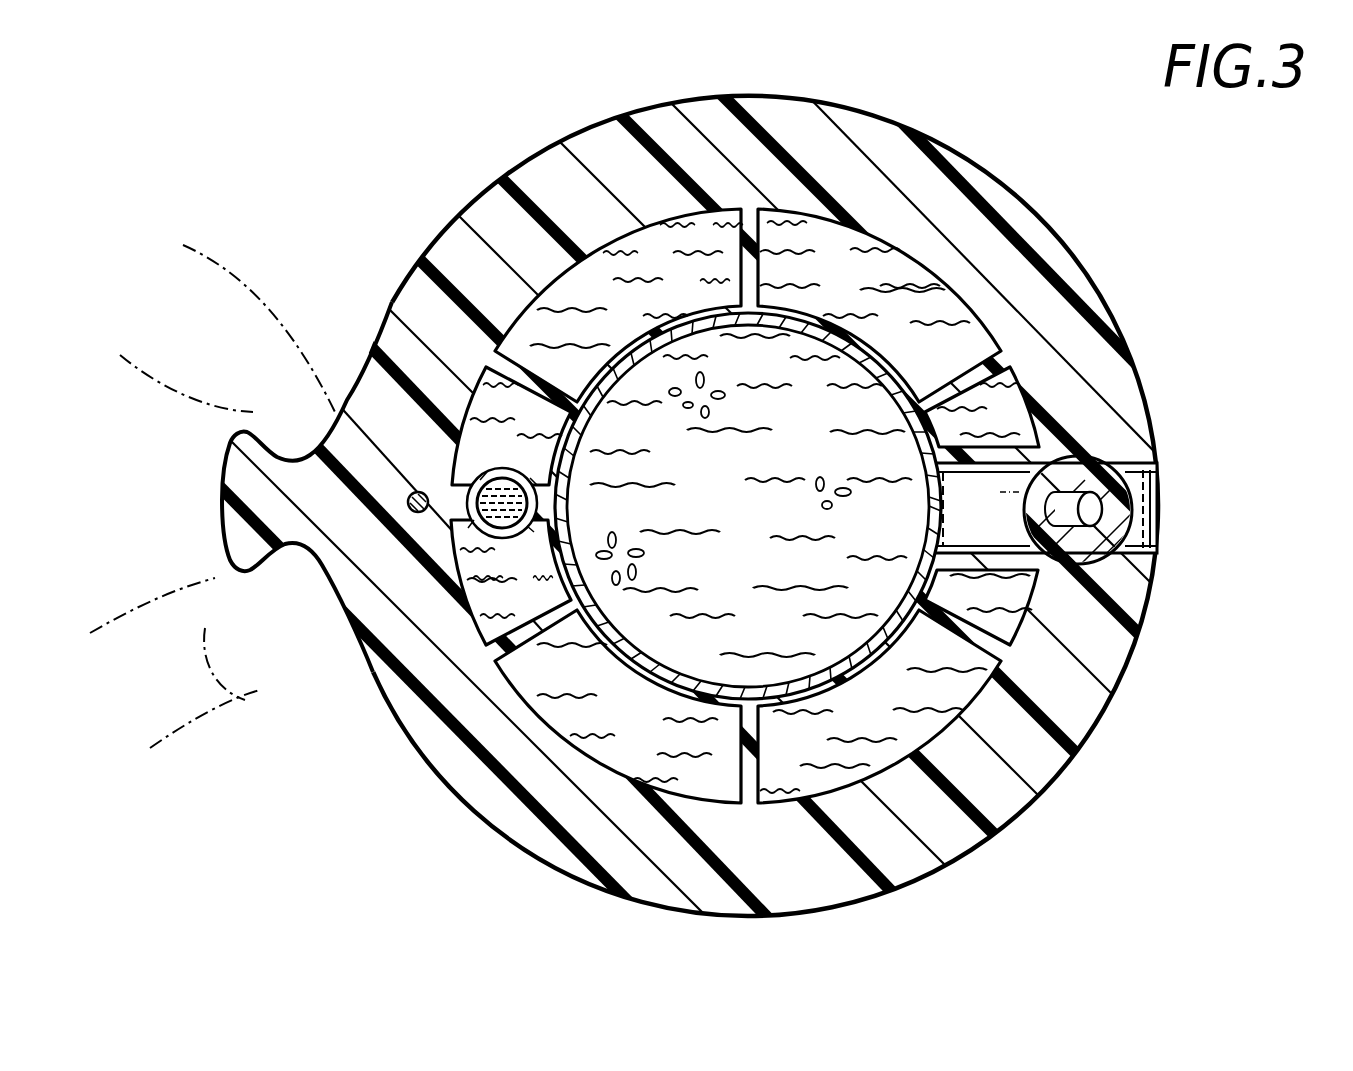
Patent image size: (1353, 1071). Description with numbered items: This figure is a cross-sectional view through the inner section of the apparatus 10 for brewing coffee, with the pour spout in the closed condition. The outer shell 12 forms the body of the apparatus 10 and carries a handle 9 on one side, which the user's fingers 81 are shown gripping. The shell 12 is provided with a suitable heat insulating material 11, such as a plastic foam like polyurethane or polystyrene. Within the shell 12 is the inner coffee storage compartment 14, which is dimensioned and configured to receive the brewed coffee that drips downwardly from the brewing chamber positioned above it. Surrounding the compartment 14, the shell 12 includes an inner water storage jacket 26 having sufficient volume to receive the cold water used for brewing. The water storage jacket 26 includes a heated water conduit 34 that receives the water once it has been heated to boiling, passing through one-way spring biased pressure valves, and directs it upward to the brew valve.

The handle 9 is at (240, 466).
The apparatus 10 is at (1163, 585).
The heat insulating material 11 is at (1078, 322).
The outer shell 12 is at (930, 130).
The inner coffee storage compartment 14 is at (738, 506).
The inner water storage jacket 26 is at (600, 272).
The heated water conduit 34 is at (455, 462).
The user's fingers 81 is at (262, 272).